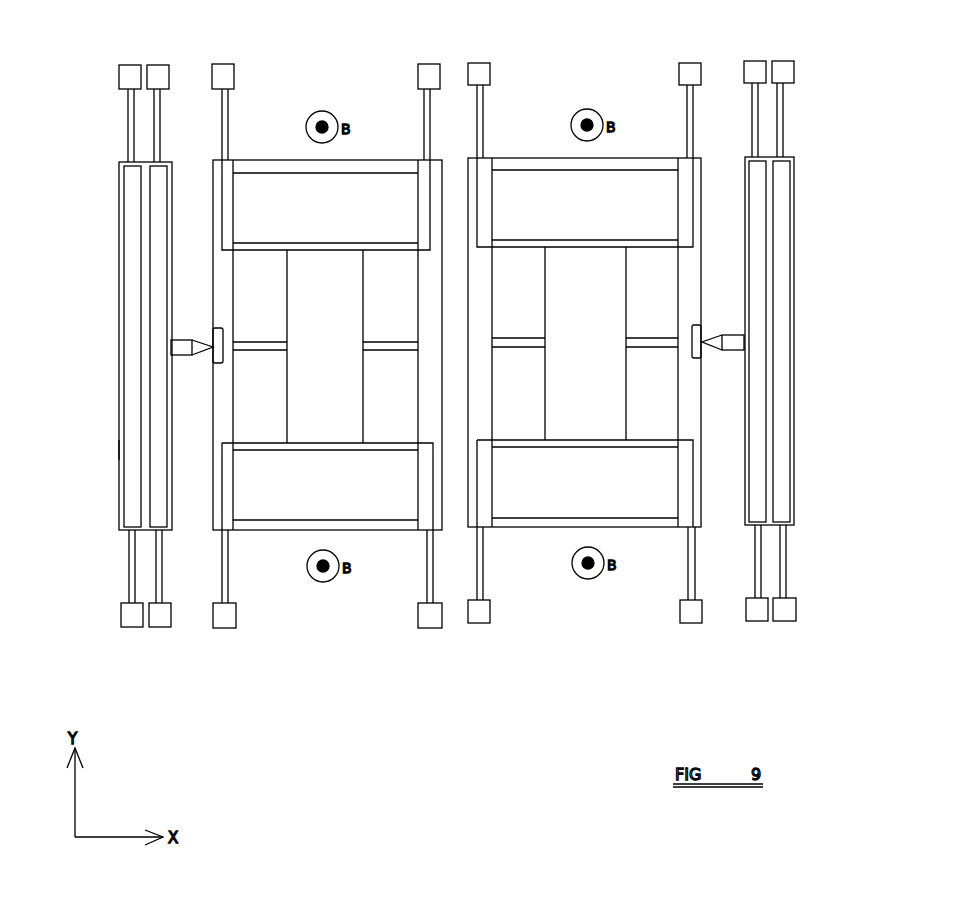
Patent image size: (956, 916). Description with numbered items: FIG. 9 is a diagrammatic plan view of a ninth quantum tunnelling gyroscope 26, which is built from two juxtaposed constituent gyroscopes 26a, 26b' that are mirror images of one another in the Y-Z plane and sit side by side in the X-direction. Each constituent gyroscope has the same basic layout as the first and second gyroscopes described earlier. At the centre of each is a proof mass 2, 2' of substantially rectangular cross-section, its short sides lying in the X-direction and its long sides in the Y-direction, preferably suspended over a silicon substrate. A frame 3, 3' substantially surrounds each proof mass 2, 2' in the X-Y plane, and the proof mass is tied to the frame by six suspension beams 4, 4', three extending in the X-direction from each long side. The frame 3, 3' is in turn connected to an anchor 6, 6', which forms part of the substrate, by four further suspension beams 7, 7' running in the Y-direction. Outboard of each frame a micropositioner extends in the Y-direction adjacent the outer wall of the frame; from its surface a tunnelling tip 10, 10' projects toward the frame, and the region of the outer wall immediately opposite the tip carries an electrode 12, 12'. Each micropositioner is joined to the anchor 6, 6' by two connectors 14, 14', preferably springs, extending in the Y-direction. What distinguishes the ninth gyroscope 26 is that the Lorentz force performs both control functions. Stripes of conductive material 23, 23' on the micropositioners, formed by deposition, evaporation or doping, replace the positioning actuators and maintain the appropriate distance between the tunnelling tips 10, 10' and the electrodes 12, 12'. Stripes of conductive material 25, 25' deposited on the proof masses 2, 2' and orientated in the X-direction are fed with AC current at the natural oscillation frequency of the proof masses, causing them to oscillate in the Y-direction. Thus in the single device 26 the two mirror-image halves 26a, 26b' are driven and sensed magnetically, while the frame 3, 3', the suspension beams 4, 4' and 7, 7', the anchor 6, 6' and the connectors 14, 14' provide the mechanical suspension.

The proof mass 2 is at (327, 345).
The frame 3 is at (409, 345).
The suspension beams 4 is at (325, 392).
The anchor 6 is at (280, 319).
The further suspension beams 7 is at (327, 335).
The tunnelling tip 10 is at (192, 379).
The electrode 12 is at (203, 326).
The connectors 14 is at (124, 346).
The stripes of conductive material 23 is at (127, 346).
The stripes of conductive material 25 is at (327, 345).
The ninth gyroscope 26 is at (112, 182).
The constituent gyroscope 26a is at (118, 452).
The proof mass 2' is at (584, 342).
The frame 3' is at (670, 342).
The suspension beams 4' is at (585, 389).
The anchor 6' is at (632, 321).
The further suspension beams 7' is at (586, 333).
The tunnelling tip 10' is at (723, 374).
The electrode 12' is at (715, 317).
The connectors 14' is at (797, 340).
The stripes of conductive material 23' is at (798, 341).
The stripes of conductive material 25' is at (585, 342).
The constituent gyroscope 26b' is at (810, 341).